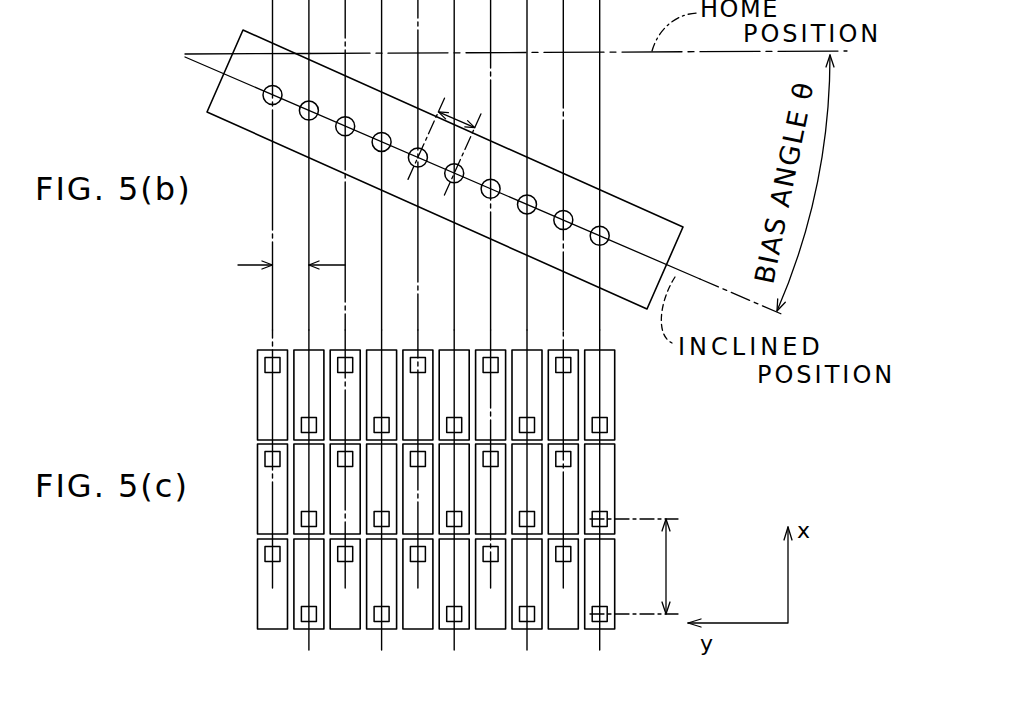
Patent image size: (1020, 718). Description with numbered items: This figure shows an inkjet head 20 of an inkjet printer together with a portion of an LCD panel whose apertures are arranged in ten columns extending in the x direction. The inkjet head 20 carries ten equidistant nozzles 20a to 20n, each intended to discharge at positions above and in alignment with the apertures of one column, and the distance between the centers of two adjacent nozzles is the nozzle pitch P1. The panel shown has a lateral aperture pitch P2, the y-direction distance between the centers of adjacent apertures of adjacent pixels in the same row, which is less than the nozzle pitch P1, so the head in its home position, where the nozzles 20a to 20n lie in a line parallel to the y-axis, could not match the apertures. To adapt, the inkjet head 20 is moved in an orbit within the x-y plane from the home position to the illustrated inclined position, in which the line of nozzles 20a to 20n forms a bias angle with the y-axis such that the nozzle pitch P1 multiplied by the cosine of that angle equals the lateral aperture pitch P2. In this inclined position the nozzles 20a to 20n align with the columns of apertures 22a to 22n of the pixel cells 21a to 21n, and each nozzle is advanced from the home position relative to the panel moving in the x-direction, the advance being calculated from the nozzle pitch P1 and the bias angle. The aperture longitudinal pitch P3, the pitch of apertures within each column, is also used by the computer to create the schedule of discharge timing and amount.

The inkjet head 20 is at (667, 220).
The nozzle 20a is at (266, 86).
The nozzle 20n is at (603, 230).
The first pixel cell 21a is at (262, 405).
The last pixel cell 21n is at (613, 387).
The aperture 22a is at (265, 365).
The aperture 22n is at (608, 427).
The nozzle pitch P1 is at (475, 116).
The lateral aperture pitch P2 is at (290, 262).
The aperture longitudinal pitch P3 is at (667, 563).